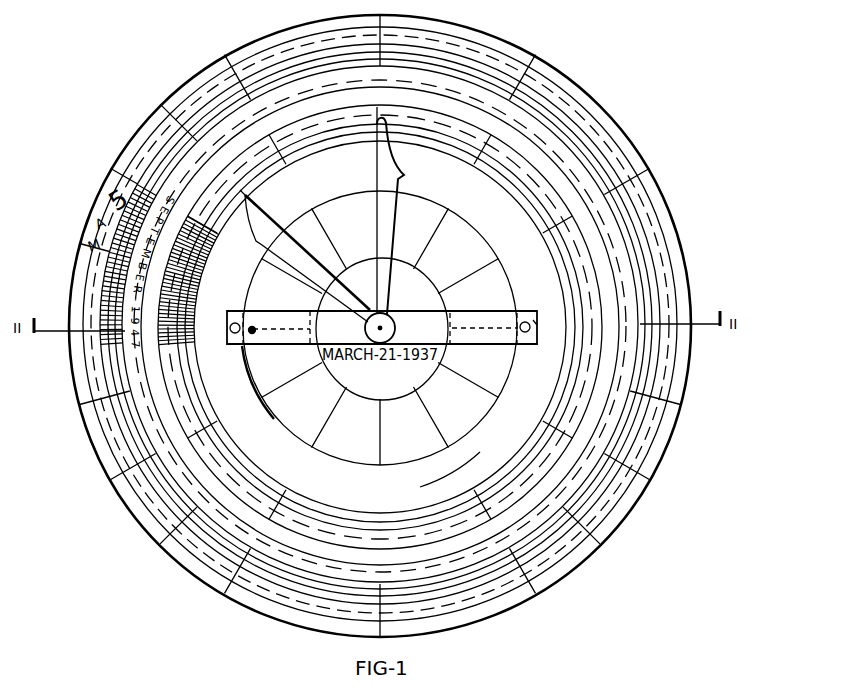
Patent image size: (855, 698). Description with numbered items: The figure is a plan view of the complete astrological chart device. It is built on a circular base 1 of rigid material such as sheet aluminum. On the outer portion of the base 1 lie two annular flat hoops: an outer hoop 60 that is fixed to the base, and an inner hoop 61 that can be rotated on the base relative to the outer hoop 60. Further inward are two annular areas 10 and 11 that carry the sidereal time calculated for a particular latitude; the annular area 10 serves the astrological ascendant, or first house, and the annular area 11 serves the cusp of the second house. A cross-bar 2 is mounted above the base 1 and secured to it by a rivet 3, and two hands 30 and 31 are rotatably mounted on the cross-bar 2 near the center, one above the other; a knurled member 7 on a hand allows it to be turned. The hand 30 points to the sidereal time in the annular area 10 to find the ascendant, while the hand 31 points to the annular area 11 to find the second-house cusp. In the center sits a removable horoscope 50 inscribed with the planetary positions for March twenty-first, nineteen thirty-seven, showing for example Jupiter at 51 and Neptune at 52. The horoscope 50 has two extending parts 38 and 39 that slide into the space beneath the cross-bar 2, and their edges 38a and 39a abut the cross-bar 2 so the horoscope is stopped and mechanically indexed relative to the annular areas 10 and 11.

The base 1 is at (505, 435).
The cross-bar 2 is at (440, 322).
The rivet 3 is at (235, 318).
The knurled member 7 is at (395, 328).
The annular area 10 is at (283, 130).
The annular area 11 is at (350, 127).
The hand 30 is at (400, 180).
The hand 31 is at (272, 224).
The extending part 38 is at (235, 363).
The edge of extension 38a is at (228, 345).
The extending part 39 is at (527, 349).
The edge of extension 39a is at (532, 328).
The horoscope 50 is at (417, 282).
The position of Jupiter 51 is at (362, 223).
The position of Neptune 52 is at (501, 360).
The outer hoop 60 is at (560, 92).
The inner hoop 61 is at (380, 324).